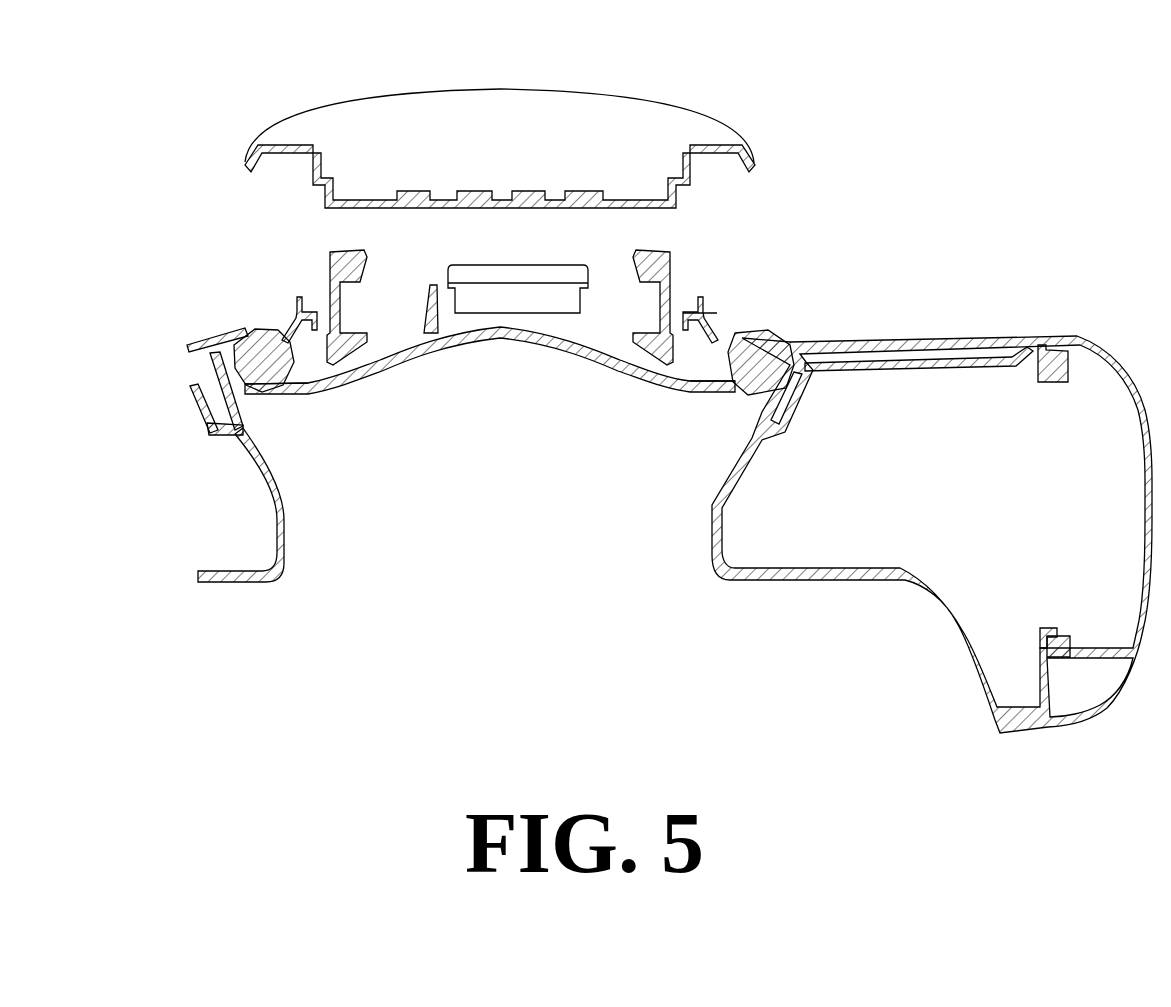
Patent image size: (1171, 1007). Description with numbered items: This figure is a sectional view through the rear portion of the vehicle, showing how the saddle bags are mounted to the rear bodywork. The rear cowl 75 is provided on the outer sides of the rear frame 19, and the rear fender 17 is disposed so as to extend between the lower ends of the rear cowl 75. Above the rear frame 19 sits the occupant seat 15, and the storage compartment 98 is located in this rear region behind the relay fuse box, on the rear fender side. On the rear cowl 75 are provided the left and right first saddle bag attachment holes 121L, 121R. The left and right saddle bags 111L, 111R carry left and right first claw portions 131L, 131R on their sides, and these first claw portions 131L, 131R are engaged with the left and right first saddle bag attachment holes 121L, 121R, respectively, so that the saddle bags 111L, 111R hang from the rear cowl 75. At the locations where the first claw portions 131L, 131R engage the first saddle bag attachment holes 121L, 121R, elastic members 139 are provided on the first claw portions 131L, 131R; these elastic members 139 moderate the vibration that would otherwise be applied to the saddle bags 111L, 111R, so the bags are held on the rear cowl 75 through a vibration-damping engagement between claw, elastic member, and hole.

The occupant seat 15 is at (503, 118).
The storage compartment 98 is at (515, 280).
The rear frame 19 is at (674, 254).
The rear cowl 75 is at (716, 312).
The right first saddle bag attachment hole 121R is at (284, 332).
The left first saddle bag attachment hole 121L is at (728, 328).
The elastic member 139 is at (252, 334).
The right first claw portion 131R is at (284, 395).
The left first claw portion 131L is at (705, 392).
The rear fender 17 is at (313, 398).
The right saddle bag 111R is at (235, 592).
The left saddle bag 111L is at (800, 588).